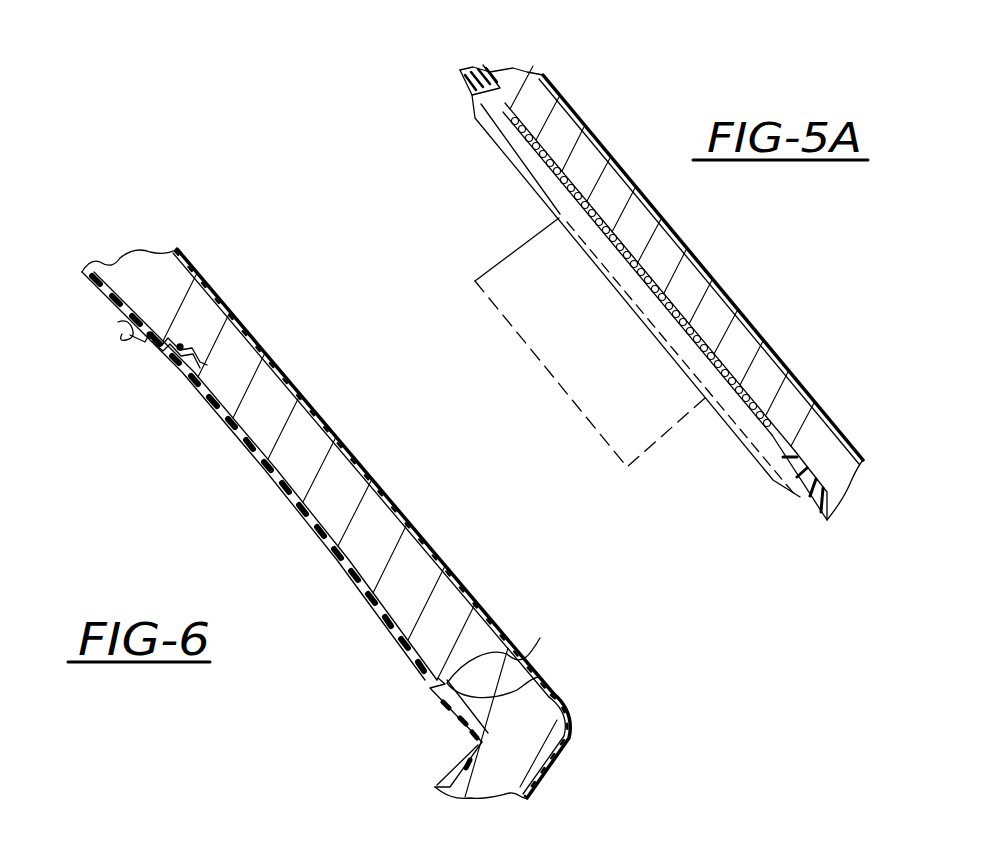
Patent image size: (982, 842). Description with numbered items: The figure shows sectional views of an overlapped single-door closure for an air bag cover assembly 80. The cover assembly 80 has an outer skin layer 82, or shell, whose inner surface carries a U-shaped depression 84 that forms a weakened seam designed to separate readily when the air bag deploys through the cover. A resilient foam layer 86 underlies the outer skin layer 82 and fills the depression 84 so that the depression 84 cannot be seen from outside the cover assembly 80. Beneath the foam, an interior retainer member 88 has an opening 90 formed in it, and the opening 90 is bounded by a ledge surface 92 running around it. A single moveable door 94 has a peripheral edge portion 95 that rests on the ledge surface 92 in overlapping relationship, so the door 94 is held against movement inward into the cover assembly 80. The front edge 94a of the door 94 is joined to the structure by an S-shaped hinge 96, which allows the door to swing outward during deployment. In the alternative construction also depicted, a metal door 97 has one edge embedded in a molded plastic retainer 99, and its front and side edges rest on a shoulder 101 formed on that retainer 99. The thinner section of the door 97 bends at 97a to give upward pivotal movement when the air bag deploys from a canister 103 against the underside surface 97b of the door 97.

In FIG. 6, the cover assembly 80 is at (352, 417).
In FIG. 6, the outer skin layer 82 is at (278, 362).
In FIG. 6, the U-shaped depression 84 is at (487, 620).
In FIG. 6, the resilient foam layer 86 is at (397, 533).
In FIG. 6, the interior retainer member 88 is at (457, 767).
In FIG. 6, the opening 90 is at (322, 637).
In FIG. 6, the ledge surface 92 is at (394, 467).
In FIG. 6, the moveable door 94 is at (303, 503).
In FIG. 6, the front edge 94a is at (222, 260).
In FIG. 6, the peripheral edge portion 95 is at (160, 367).
In FIG. 6, the S-shaped hinge 96 is at (132, 363).
In FIG. 5A, the metal door 97 is at (687, 330).
In FIG. 5A, the bend region 97a is at (540, 150).
In FIG. 5A, the underside surface 97b is at (563, 202).
In FIG. 5A, the molded plastic retainer 99 is at (494, 90).
In FIG. 5A, the shoulder 101 is at (777, 430).
In FIG. 5A, the canister 103 is at (533, 232).